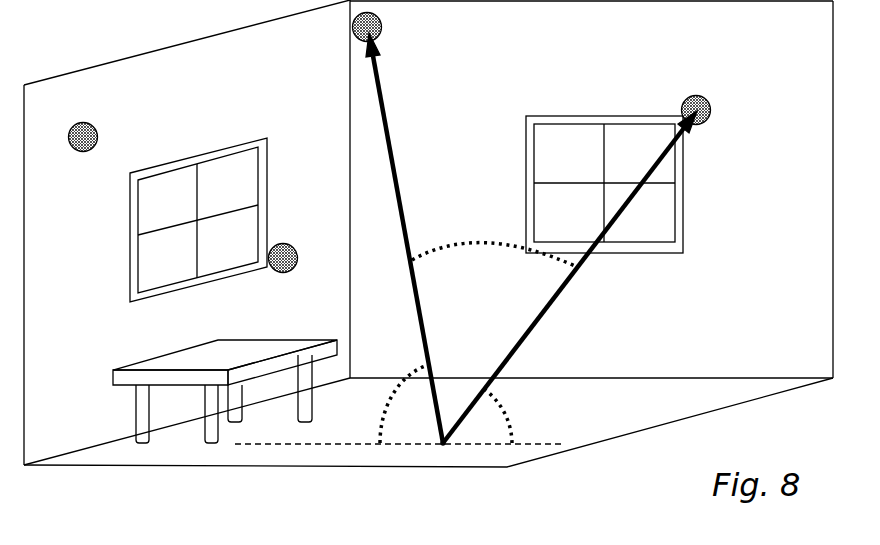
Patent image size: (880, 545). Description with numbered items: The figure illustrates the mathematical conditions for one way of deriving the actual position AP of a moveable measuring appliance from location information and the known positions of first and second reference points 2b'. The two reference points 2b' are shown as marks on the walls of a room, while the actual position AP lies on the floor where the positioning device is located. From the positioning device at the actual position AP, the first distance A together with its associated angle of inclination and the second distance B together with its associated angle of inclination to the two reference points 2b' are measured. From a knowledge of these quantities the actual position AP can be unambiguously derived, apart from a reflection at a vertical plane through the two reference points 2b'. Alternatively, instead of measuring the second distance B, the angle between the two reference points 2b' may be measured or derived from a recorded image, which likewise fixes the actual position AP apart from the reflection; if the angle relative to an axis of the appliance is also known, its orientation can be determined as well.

The reference point 2b' is at (390, 143).
The first distance A is at (353, 38).
The second distance B is at (703, 125).
The actual position AP is at (485, 474).